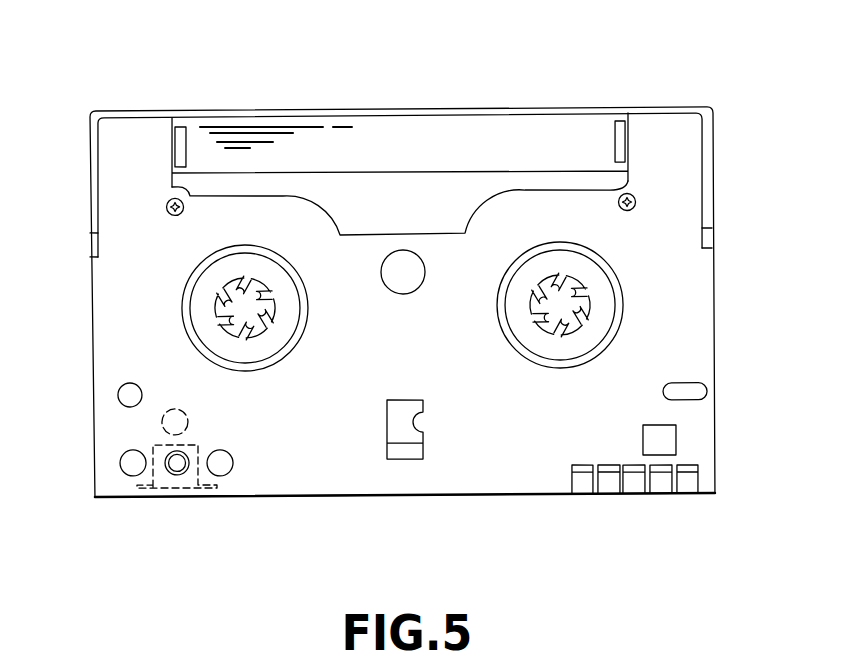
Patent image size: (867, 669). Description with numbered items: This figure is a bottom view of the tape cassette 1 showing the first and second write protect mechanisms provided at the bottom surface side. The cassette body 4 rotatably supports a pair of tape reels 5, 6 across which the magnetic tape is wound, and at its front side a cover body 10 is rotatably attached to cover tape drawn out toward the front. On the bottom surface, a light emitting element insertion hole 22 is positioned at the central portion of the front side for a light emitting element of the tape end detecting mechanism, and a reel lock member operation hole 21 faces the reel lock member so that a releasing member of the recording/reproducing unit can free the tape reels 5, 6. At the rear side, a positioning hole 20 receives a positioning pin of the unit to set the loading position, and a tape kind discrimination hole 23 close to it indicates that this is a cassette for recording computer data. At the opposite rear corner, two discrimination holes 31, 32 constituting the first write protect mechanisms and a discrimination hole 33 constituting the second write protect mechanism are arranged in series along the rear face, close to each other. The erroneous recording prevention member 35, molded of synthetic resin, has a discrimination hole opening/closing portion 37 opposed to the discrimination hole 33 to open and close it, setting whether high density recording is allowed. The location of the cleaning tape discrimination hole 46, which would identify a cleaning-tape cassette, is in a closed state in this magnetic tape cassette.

The tape cassette 1 is at (654, 91).
The cassette body 4 is at (682, 335).
The tape reel 5 is at (544, 348).
The tape reel 6 is at (277, 344).
The cover body 10 is at (466, 108).
The positioning hole 20 is at (689, 398).
The reel lock member operation hole 21 is at (422, 430).
The light emitting element insertion hole 22 is at (415, 290).
The tape kind discrimination hole 23 is at (667, 452).
The discrimination hole 31 is at (129, 466).
The discrimination hole 32 is at (222, 466).
The discrimination hole 33 is at (176, 474).
The erroneous recording prevention member 35 is at (144, 486).
The discrimination hole opening/closing portion 37 is at (184, 468).
The cleaning tape discrimination hole 46 is at (164, 423).